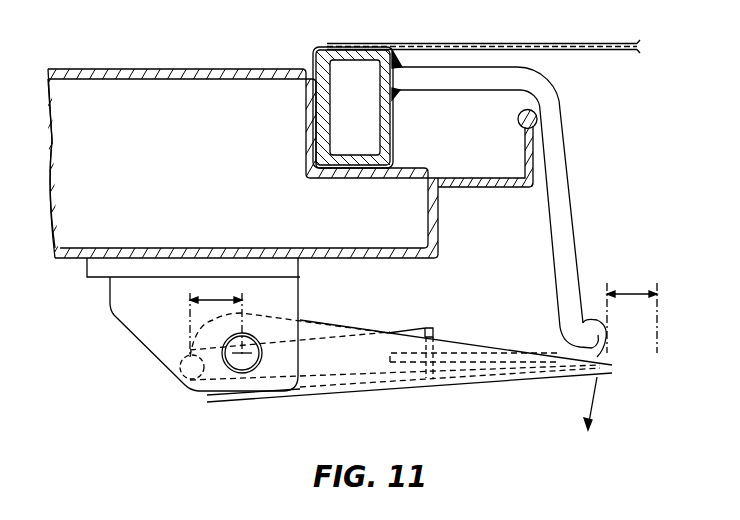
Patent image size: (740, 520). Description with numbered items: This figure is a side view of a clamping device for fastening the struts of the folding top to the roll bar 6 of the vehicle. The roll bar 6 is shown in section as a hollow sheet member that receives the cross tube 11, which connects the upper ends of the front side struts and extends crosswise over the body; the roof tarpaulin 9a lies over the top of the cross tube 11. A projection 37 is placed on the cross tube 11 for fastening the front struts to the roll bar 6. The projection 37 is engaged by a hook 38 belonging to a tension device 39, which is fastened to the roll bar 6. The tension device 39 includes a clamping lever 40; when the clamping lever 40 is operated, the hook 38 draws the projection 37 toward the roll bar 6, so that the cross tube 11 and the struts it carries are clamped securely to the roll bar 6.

The roll bar 6 is at (188, 70).
The cross tube 11 is at (342, 55).
The projection 37 is at (447, 73).
The roof tarpaulin 9a is at (562, 43).
The hook 38 is at (608, 336).
The tension device 39 is at (148, 337).
The clamping lever 40 is at (343, 365).